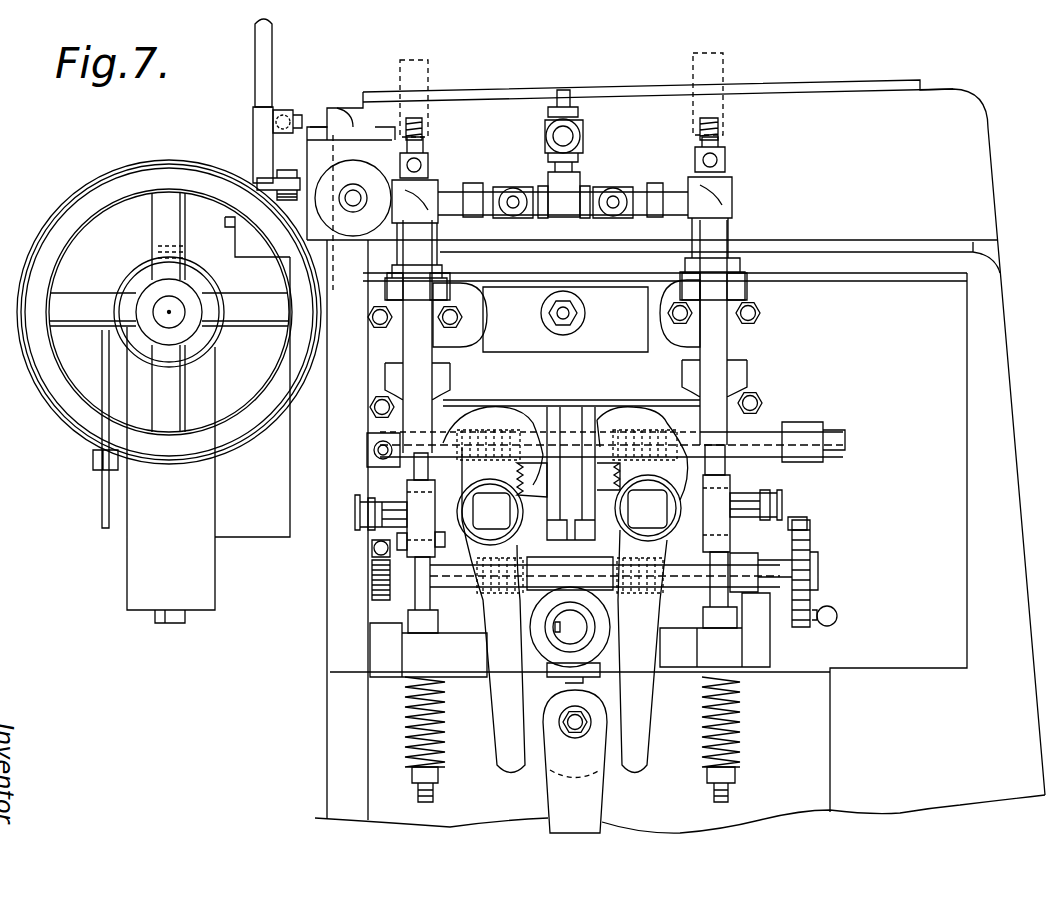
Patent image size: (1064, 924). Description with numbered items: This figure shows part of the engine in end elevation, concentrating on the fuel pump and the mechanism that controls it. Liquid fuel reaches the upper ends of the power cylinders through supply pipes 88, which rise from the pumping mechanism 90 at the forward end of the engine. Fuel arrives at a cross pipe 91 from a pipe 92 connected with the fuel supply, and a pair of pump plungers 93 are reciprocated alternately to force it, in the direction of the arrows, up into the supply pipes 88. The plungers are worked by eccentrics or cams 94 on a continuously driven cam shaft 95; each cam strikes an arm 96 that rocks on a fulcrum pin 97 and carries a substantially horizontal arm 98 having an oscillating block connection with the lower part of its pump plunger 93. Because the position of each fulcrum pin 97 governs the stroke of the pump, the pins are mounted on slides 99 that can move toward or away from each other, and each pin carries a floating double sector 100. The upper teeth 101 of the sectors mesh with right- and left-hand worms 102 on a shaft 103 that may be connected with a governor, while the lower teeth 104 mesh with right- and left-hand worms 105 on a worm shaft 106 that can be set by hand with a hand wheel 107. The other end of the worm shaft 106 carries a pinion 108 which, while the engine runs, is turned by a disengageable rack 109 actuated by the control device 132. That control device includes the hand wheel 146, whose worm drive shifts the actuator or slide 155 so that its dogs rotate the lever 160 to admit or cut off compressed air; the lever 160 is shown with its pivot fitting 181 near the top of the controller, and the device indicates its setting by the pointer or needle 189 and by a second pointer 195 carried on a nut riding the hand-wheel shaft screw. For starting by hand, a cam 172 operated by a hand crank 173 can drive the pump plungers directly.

The supply pipe 88 is at (433, 72).
The pumping mechanism 90 is at (598, 406).
The cross pipe 91 is at (578, 192).
The pipe 92 is at (570, 92).
The pump plunger 93 is at (409, 482).
The eccentric or cam 94 is at (533, 643).
The cam shaft 95 is at (573, 627).
The arm 96 is at (513, 727).
The fulcrum pin 97 is at (643, 483).
The horizontal arm 98 is at (383, 503).
The slide 99 is at (613, 410).
The floating double sector 100 is at (527, 485).
The upper teeth 101 is at (527, 470).
The worm 102 is at (468, 433).
The shaft 103 is at (828, 440).
The lower teeth 104 is at (460, 558).
The worm 105 is at (613, 565).
The worm shaft 106 is at (780, 563).
The hand wheel 107 is at (805, 627).
The pinion 108 is at (378, 603).
The disengageable rack 109 is at (380, 552).
The control device 132 is at (53, 491).
The hand wheel 146 is at (75, 408).
The actuator or slide 155 is at (290, 178).
The lever 160 is at (262, 150).
The cam 172 is at (547, 750).
The hand crank 173 is at (583, 792).
The pivot 181 is at (286, 112).
The pointer or needle 189 is at (100, 362).
The pointer 195 is at (145, 262).